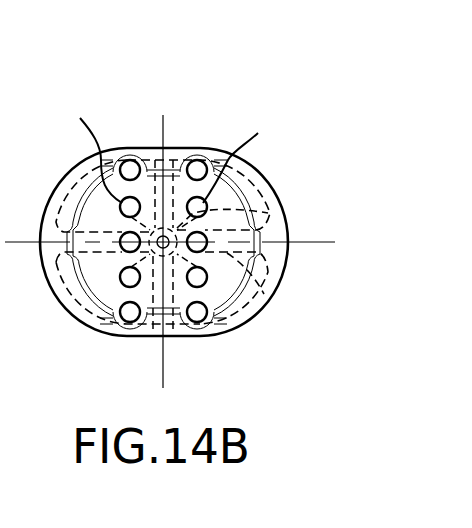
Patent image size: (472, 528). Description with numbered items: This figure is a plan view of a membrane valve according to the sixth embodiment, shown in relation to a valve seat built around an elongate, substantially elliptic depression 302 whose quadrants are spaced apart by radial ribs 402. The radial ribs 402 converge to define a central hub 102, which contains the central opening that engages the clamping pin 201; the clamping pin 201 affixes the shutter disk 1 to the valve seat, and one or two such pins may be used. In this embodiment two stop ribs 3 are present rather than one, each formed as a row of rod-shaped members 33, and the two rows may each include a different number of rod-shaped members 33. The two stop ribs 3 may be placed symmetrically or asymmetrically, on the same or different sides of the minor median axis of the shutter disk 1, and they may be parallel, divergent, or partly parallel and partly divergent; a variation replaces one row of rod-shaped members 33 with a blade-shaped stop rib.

The shutter disk 1 is at (270, 166).
The stop ribs 3 is at (126, 146).
The rod-shaped members 33 is at (178, 146).
The central hub 102 is at (268, 213).
The clamping pin 201 is at (147, 260).
The elongate or substantially elliptic depression 302 is at (73, 292).
The radial ribs 402 is at (264, 294).